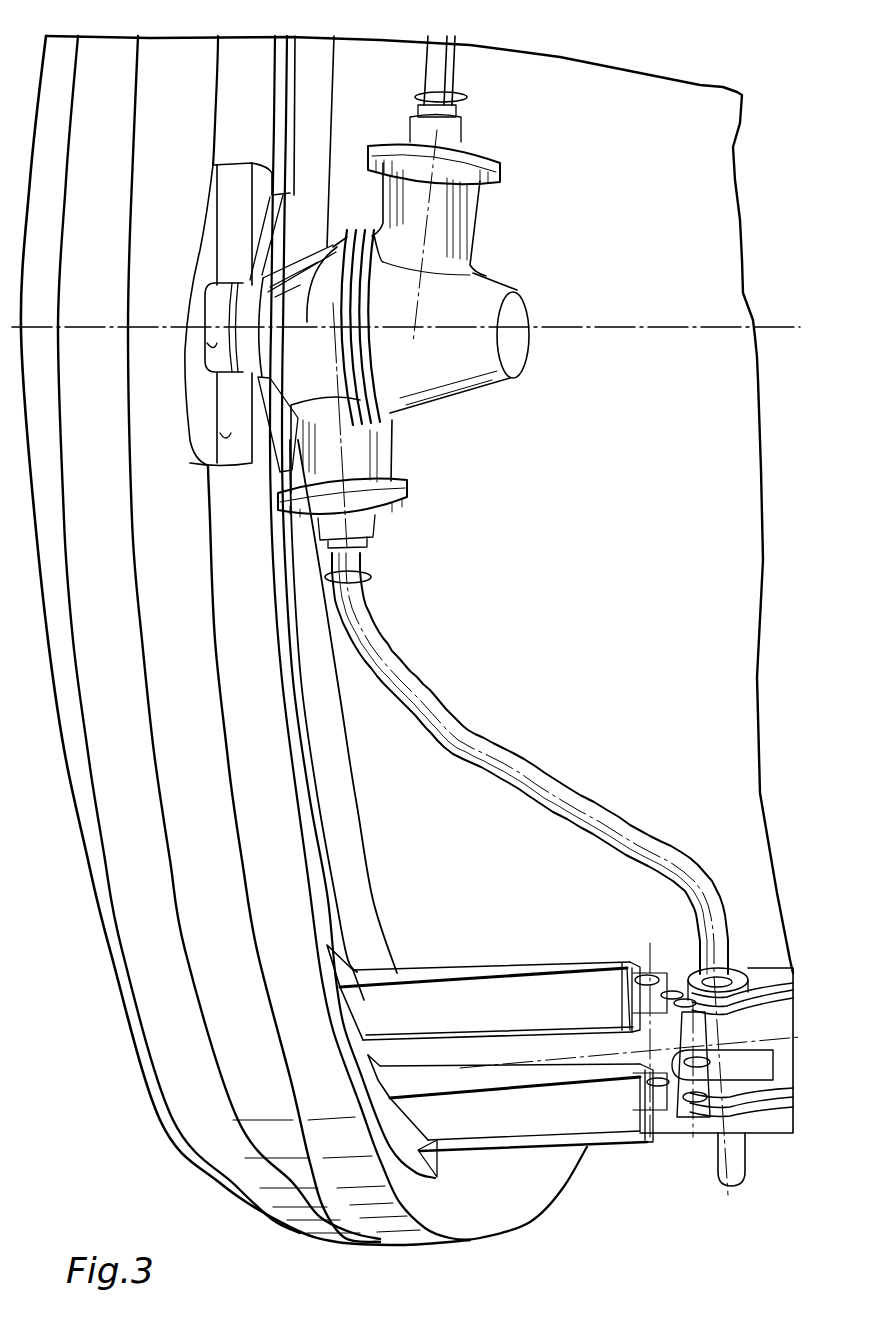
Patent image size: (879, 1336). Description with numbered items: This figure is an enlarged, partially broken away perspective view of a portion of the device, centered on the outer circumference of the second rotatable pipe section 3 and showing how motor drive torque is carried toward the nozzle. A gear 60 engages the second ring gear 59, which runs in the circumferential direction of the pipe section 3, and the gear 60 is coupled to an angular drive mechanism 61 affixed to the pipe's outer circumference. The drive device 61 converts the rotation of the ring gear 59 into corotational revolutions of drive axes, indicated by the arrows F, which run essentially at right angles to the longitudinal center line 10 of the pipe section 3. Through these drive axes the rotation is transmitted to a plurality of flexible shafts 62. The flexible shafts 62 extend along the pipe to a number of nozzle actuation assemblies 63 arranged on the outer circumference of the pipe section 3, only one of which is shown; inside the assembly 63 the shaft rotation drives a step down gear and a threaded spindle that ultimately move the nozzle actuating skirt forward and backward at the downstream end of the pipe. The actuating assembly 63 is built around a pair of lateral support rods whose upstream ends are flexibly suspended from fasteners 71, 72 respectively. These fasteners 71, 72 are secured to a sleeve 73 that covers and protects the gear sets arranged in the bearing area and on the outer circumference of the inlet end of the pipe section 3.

The second pipe section 3 is at (462, 634).
The longitudinal center line 10 is at (643, 338).
The second ring gear 59 is at (230, 437).
The gear 60 is at (218, 345).
The angular drive mechanism 61 is at (398, 311).
The flexible shafts 62 is at (453, 53).
The nozzle actuation assembly 63 is at (773, 1057).
The fastener 71 is at (450, 974).
The fastener 72 is at (450, 1145).
The sleeve 73 is at (240, 1063).
The drive axes arrows F is at (465, 98).